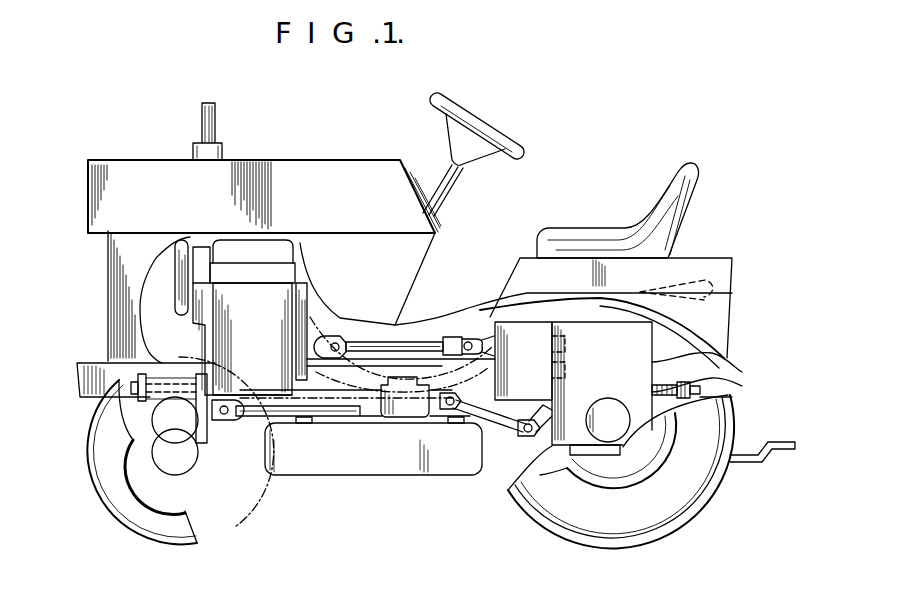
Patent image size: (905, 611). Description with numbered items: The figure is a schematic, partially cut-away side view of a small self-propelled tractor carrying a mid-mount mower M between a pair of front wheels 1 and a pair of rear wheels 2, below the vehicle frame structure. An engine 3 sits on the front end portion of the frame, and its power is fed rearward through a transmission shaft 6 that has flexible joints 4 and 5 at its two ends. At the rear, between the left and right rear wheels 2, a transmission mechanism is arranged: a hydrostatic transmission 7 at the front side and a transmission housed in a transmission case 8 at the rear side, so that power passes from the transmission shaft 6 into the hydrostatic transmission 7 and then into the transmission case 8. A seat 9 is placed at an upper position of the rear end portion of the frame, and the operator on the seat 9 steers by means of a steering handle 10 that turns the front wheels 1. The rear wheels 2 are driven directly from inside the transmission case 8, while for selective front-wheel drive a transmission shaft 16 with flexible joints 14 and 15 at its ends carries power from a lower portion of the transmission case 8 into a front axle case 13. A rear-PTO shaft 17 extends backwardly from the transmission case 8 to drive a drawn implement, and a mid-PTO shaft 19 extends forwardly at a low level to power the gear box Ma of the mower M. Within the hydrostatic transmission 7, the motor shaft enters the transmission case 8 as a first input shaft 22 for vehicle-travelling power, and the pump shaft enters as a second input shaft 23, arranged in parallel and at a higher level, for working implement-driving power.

The front wheels 1 is at (167, 528).
The rear wheels 2 is at (693, 487).
The engine 3 is at (283, 268).
The flexible joint 4 is at (338, 340).
The flexible joint 5 is at (467, 340).
The transmission shaft 6 is at (415, 345).
The hydrostatic transmission 7 is at (529, 342).
The transmission case 8 is at (715, 366).
The seat 9 is at (658, 200).
The steering handle 10 is at (503, 135).
The front axle case 13 is at (168, 419).
The flexible joint 14 is at (553, 410).
The flexible joint 15 is at (227, 425).
The transmission shaft 16 is at (305, 423).
The rear-PTO shaft 17 is at (716, 384).
The mid-PTO shaft 19 is at (528, 433).
The first input shaft 22 is at (565, 372).
The second input shaft 23 is at (565, 344).
The mower M is at (330, 455).
The gear box Ma is at (397, 420).